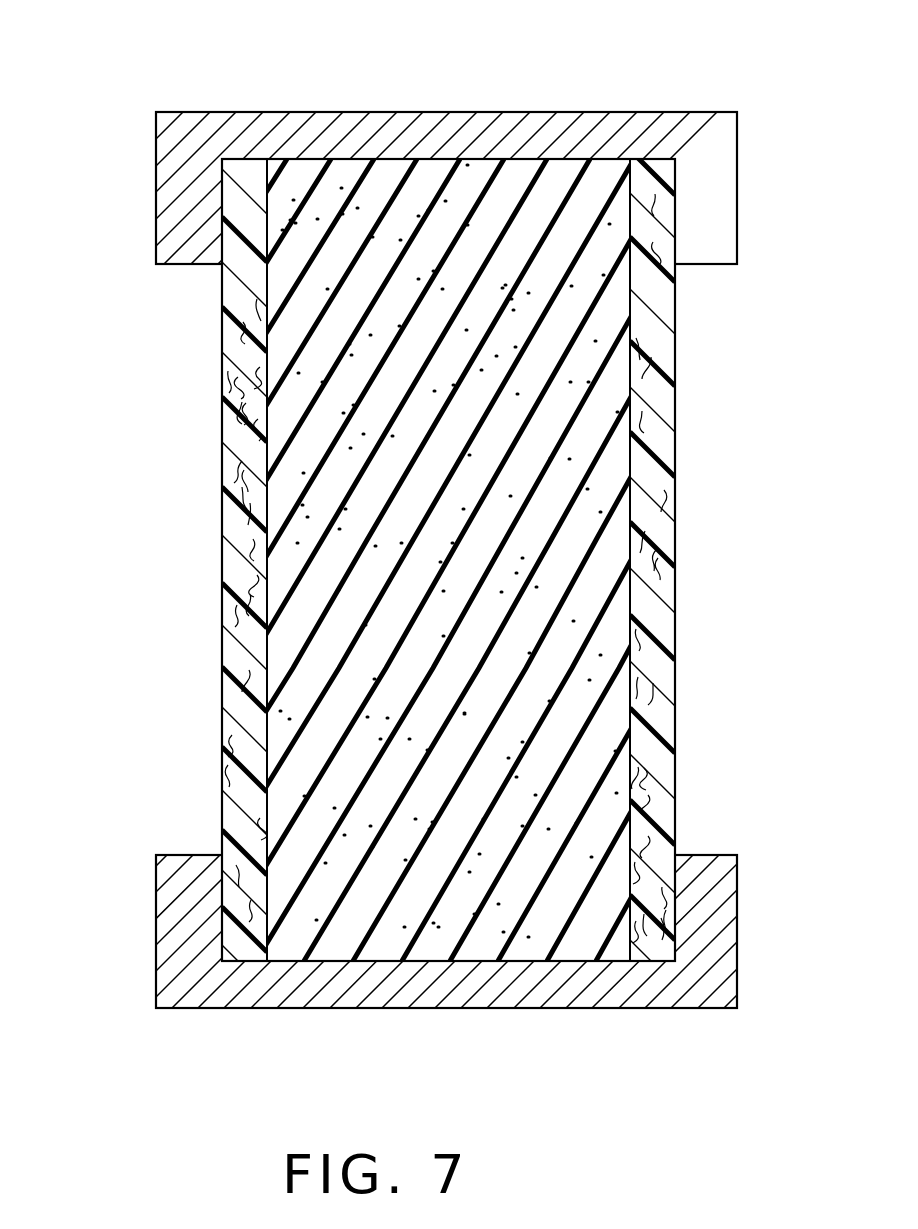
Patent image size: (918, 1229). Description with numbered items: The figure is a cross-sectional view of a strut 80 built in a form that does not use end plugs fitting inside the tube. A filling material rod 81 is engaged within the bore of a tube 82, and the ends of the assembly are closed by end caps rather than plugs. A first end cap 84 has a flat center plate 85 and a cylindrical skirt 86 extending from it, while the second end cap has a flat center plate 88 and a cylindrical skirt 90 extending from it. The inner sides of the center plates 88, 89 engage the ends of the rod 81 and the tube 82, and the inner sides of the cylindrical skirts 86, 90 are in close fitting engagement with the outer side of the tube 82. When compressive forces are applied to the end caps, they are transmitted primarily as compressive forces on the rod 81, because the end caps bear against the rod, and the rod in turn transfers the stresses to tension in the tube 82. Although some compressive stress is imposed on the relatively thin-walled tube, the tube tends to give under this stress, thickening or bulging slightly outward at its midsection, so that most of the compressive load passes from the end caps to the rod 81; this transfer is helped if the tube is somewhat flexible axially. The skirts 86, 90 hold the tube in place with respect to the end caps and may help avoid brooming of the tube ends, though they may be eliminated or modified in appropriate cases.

The strut 80 is at (459, 570).
The filling material rod 81 is at (618, 633).
The tube 82 is at (235, 525).
The first end cap 84 is at (368, 144).
The flat center plate 85 is at (368, 152).
The cylindrical skirt 86 is at (155, 203).
The flat center plate 88 is at (445, 976).
The center plate 89 is at (445, 976).
The cylindrical skirt 90 is at (157, 930).